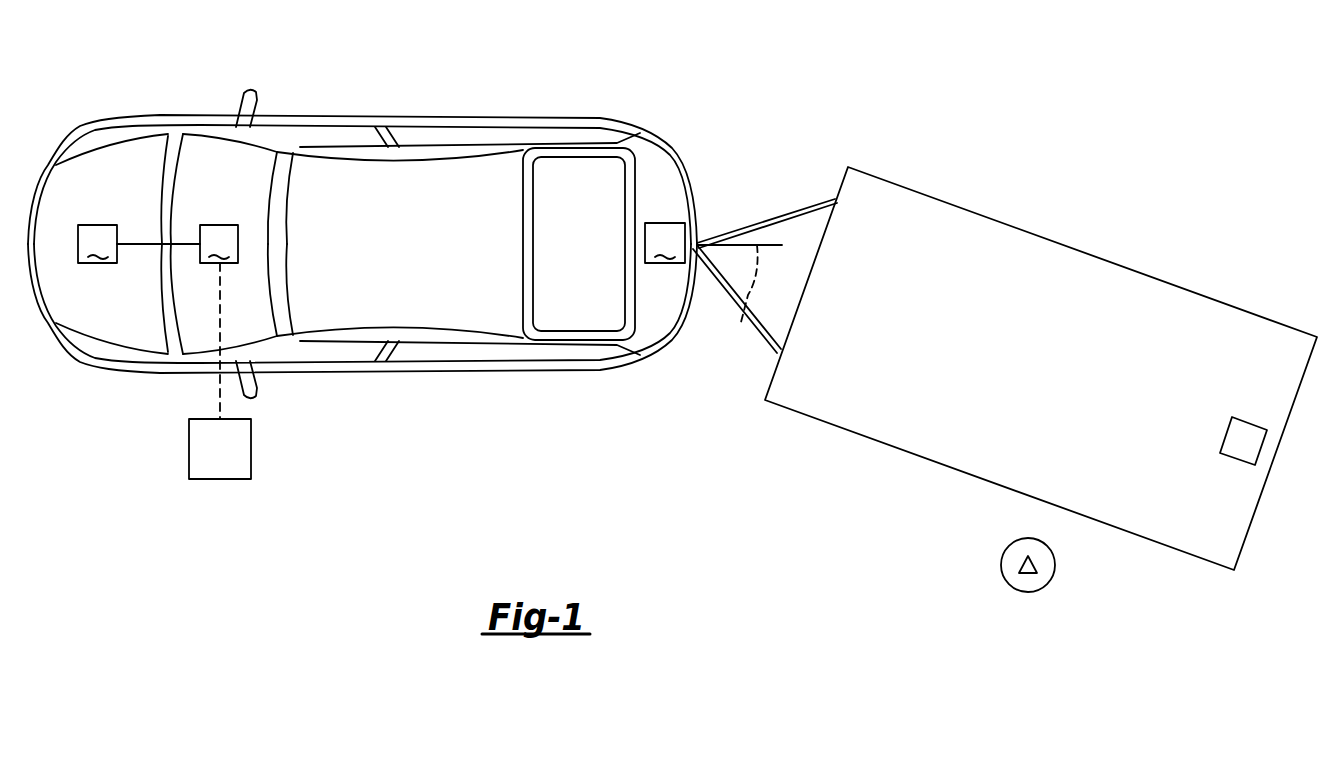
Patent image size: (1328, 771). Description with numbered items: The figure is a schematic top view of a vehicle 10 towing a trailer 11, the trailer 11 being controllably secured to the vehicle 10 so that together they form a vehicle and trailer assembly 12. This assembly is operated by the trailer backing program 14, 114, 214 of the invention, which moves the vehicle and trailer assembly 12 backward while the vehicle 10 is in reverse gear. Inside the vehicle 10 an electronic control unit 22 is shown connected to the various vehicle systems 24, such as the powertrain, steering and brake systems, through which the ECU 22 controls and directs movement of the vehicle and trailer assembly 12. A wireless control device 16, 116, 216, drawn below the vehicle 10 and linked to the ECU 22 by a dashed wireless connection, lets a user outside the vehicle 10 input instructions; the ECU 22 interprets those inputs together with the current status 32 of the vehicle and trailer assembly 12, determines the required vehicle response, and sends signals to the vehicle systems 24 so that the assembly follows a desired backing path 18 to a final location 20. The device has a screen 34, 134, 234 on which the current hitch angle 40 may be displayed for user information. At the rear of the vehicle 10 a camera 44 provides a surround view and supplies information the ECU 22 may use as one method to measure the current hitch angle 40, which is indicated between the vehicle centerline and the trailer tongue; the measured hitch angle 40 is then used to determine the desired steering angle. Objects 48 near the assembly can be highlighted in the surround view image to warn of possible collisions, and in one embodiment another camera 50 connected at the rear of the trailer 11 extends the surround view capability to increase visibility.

The vehicle 10 is at (362, 213).
The trailer 11 is at (915, 188).
The vehicle and trailer assembly 12 is at (765, 274).
The trailer backing program 14 is at (362, 213).
The trailer backing system (second embodiment) 114 is at (362, 213).
The trailer backing system (third embodiment) 214 is at (422, 72).
The wireless control device 16 is at (215, 449).
The mobile device (second embodiment) 116 is at (215, 449).
The mobile device (third embodiment) 216 is at (215, 449).
The desired backing path 18 is at (1174, 599).
The final location 20 is at (1240, 707).
The electronic control unit (ECU) 22 is at (219, 322).
The vehicle systems 24 is at (139, 244).
The current status 32 is at (705, 397).
The screen 34 is at (279, 449).
The screen (second embodiment) 134 is at (279, 449).
The screen (third embodiment) 234 is at (228, 448).
The hitch angle 40 is at (743, 301).
The camera 44 is at (665, 243).
The objects 48 is at (1000, 566).
The camera 50 is at (1228, 435).